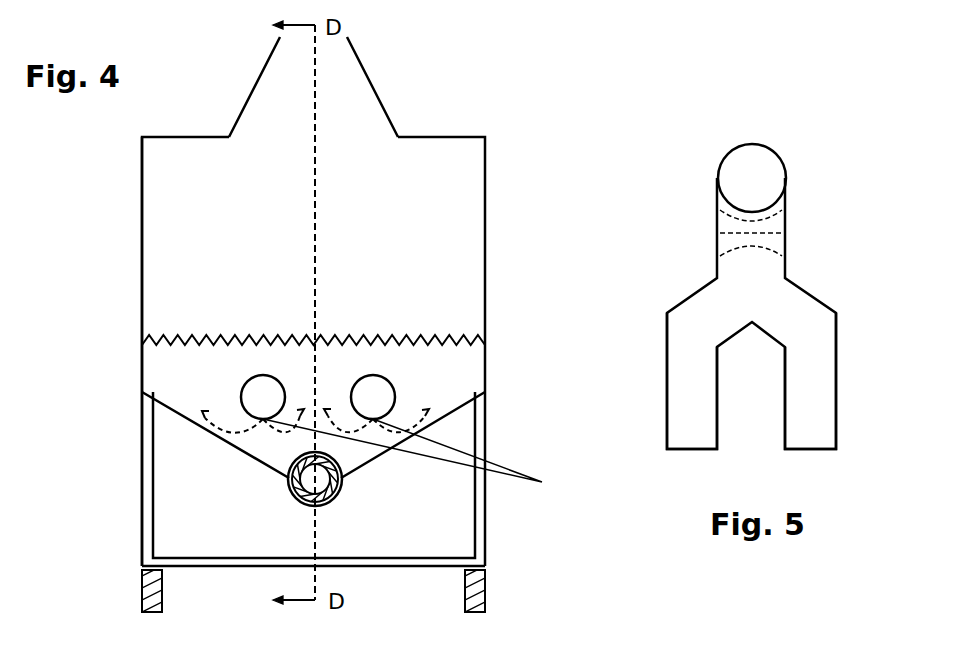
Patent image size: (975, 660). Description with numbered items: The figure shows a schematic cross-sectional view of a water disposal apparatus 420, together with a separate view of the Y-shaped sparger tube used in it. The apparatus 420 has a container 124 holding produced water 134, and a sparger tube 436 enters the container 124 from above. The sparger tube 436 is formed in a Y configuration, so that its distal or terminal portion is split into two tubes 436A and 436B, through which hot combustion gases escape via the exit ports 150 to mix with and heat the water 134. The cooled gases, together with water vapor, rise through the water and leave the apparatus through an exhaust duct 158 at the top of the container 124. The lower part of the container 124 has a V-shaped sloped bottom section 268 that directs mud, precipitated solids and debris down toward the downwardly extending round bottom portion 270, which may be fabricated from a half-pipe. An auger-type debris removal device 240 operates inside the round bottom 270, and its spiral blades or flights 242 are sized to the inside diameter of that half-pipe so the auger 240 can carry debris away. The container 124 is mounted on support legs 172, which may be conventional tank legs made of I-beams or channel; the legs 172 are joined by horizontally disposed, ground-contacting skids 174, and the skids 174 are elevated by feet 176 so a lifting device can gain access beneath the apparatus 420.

In FIG. 4, the container 124 is at (487, 273).
In FIG. 4, the exhaust duct 158 is at (382, 100).
In FIG. 4, the water disposal apparatus 420 is at (522, 140).
In FIG. 4, the water 134 is at (313, 320).
In FIG. 4, the distal end of sparger tube 436A is at (255, 398).
In FIG. 5, the distal end of sparger tube 436A is at (697, 360).
In FIG. 4, the distal end of sparger tube 436B is at (380, 400).
In FIG. 5, the distal end of sparger tube 436B is at (815, 362).
In FIG. 5, the sparger tube 436 is at (806, 262).
In FIG. 4, the exit ports 150 is at (542, 482).
In FIG. 4, the sloped bottom section 268 is at (254, 462).
In FIG. 4, the downwardly extending portion 270 is at (294, 497).
In FIG. 4, the spiral blades 242 is at (338, 498).
In FIG. 4, the auger-type debris removal device 240 is at (318, 479).
In FIG. 4, the support legs 172 is at (148, 476).
In FIG. 4, the skids 174 is at (390, 570).
In FIG. 4, the feet 176 is at (176, 594).